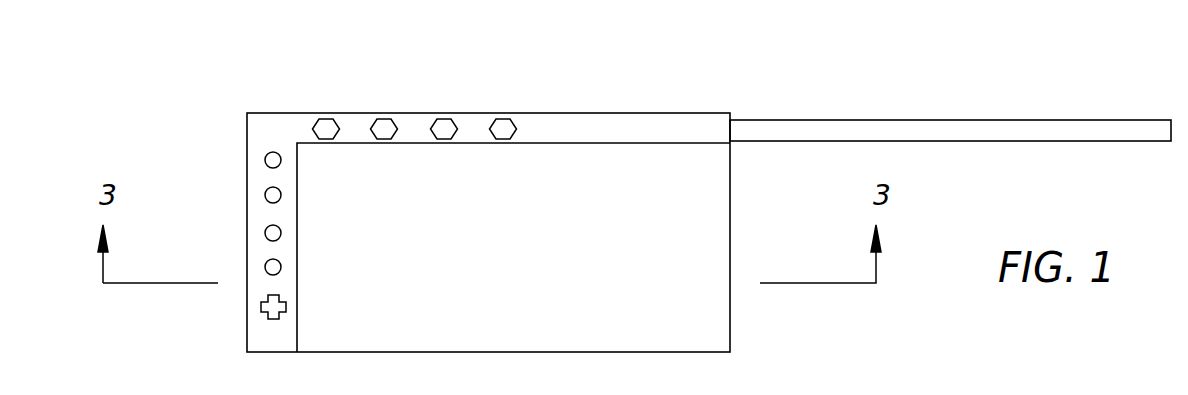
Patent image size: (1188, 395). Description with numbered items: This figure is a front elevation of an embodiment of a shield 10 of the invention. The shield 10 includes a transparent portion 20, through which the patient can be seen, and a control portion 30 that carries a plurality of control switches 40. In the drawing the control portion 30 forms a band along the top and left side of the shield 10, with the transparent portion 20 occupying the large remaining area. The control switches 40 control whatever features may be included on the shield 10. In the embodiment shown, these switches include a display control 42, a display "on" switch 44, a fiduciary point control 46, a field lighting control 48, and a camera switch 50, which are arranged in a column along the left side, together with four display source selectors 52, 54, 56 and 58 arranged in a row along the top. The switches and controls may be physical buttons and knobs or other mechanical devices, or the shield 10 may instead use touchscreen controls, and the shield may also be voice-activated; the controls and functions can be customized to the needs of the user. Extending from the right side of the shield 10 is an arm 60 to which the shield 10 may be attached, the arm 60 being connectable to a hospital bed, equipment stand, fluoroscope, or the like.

The shield 10 is at (745, 55).
The transparent portion 20 is at (698, 302).
The control portion 30 is at (630, 127).
The control switches 40 is at (220, 120).
The display control 42 is at (267, 301).
The display "on" switch 44 is at (265, 267).
The fiduciary point control 46 is at (265, 233).
The field lighting control 48 is at (265, 195).
The camera switch 50 is at (265, 160).
The display source selector 52 is at (326, 130).
The display source selector 54 is at (384, 130).
The display source selector 56 is at (444, 130).
The display source selector 58 is at (503, 130).
The arm 60 is at (897, 127).